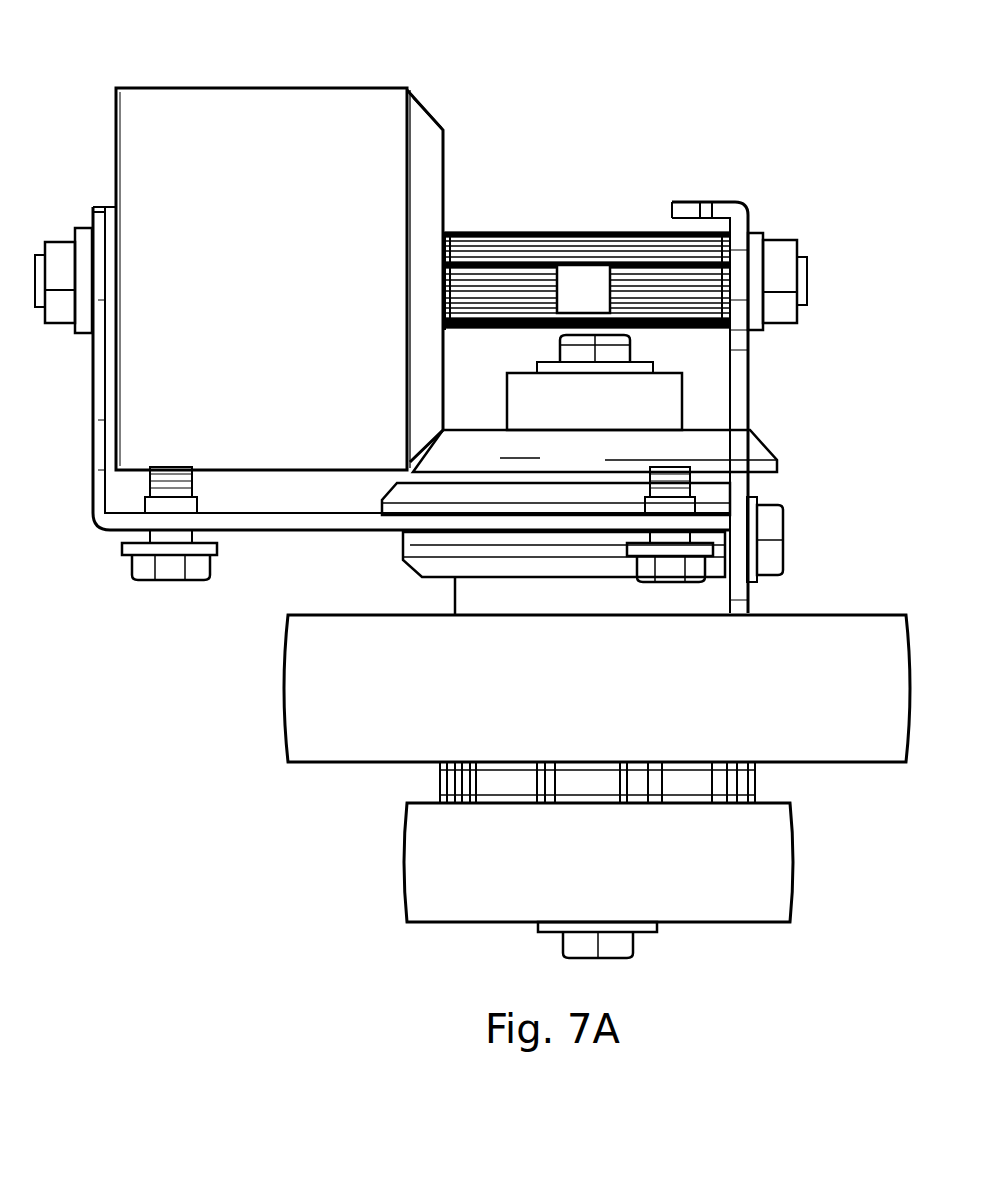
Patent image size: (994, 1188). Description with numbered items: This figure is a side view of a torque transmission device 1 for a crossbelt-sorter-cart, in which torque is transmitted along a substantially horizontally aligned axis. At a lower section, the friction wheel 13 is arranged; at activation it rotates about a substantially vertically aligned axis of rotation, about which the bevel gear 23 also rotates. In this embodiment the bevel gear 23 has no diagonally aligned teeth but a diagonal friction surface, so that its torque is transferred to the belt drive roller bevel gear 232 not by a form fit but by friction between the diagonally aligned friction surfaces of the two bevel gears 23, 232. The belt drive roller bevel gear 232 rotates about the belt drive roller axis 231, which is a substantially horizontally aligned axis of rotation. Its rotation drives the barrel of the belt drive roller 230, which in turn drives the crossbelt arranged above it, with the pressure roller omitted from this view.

The torque transmission device 1 is at (466, 174).
The friction wheel 13 is at (772, 851).
The bevel gear 23 is at (700, 450).
The belt drive roller 230 is at (242, 110).
The belt drive roller axis 231 is at (539, 250).
The belt drive roller bevel gear 232 is at (425, 133).